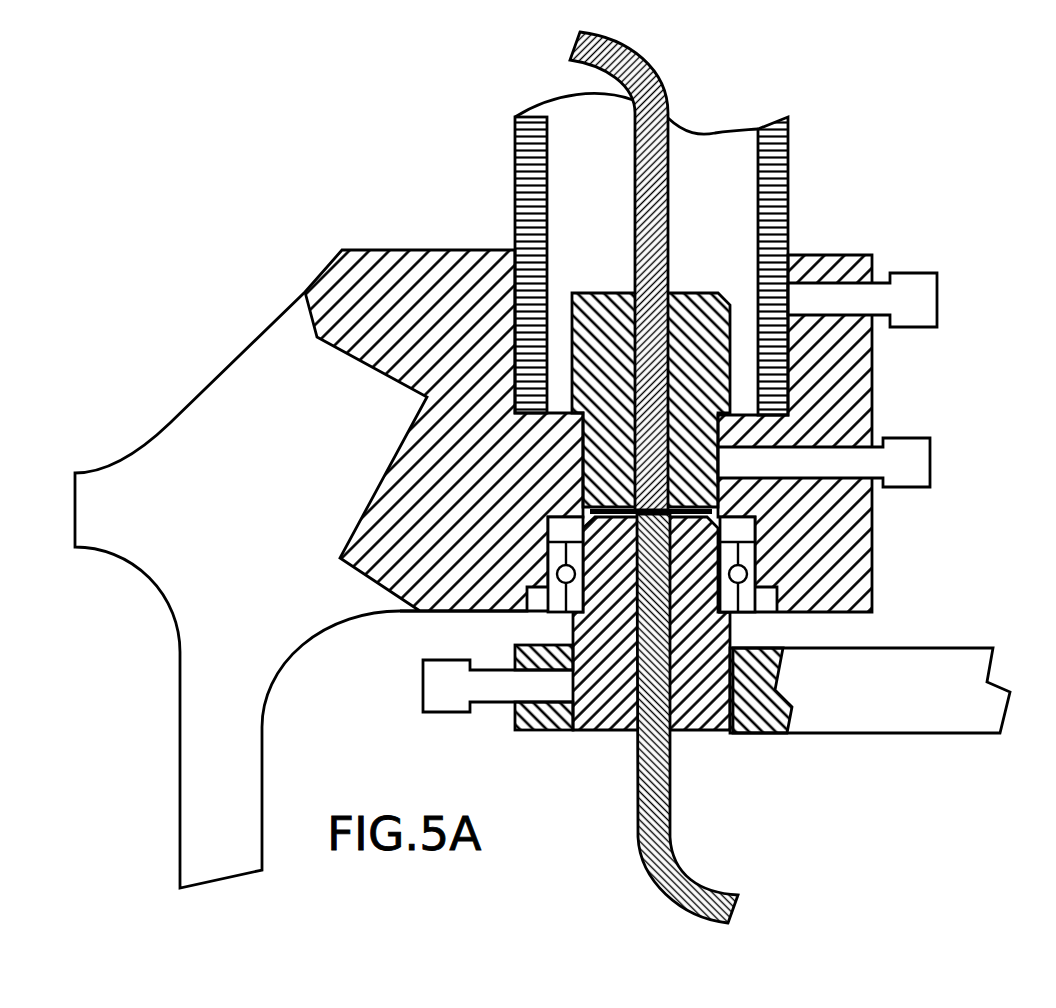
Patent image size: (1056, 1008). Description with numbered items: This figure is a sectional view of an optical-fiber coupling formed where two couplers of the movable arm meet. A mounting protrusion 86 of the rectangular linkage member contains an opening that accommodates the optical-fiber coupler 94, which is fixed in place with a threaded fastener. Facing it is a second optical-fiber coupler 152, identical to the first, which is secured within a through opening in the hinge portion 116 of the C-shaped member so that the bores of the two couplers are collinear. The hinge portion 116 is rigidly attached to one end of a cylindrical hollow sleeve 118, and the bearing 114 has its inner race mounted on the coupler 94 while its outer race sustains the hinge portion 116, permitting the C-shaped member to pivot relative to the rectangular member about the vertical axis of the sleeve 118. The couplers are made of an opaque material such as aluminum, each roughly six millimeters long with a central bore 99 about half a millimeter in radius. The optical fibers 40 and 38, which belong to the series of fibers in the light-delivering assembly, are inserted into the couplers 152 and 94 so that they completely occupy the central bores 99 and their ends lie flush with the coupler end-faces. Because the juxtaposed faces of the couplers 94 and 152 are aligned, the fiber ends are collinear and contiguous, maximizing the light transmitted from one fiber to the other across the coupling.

The optical fiber 38 is at (678, 867).
The optical fiber 40 is at (645, 65).
The mounting protrusion 86 is at (822, 725).
The optical-fiber coupler 94 is at (600, 730).
The central bore 99 is at (680, 350).
The bearing 114 is at (753, 603).
The hinge portion 116 is at (273, 313).
The cylindrical hollow sleeve 118 is at (788, 137).
The optical-fiber coupler 152 is at (682, 293).